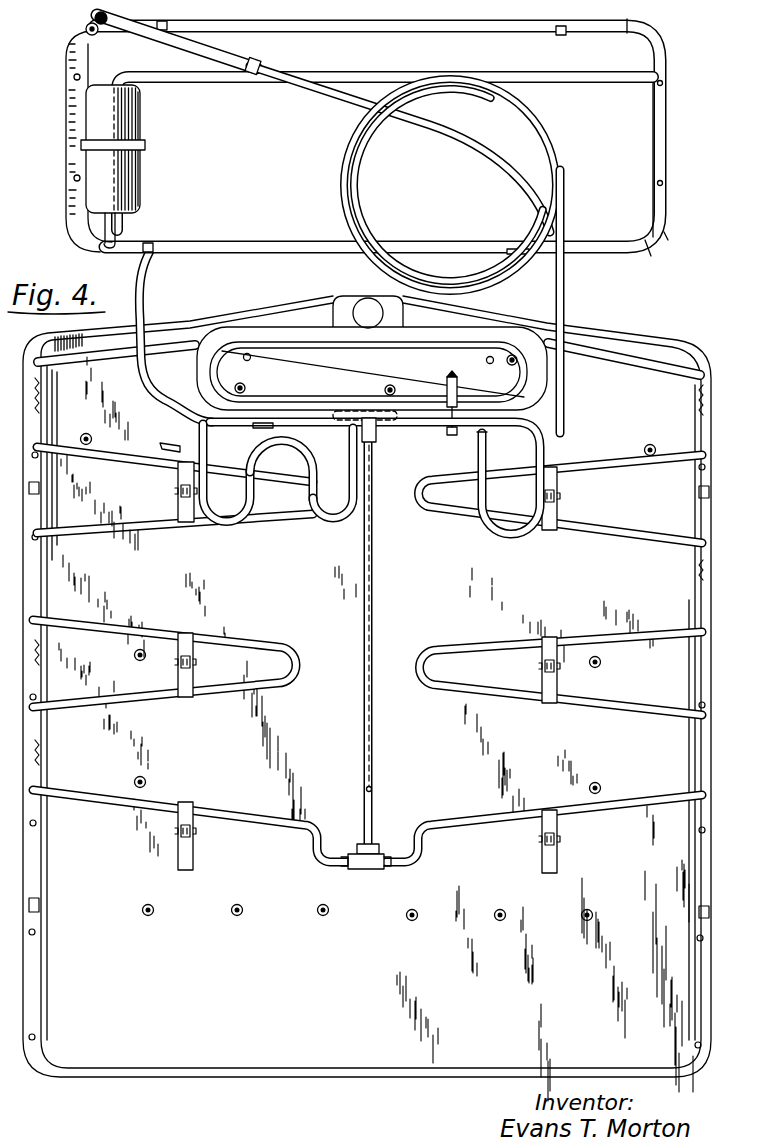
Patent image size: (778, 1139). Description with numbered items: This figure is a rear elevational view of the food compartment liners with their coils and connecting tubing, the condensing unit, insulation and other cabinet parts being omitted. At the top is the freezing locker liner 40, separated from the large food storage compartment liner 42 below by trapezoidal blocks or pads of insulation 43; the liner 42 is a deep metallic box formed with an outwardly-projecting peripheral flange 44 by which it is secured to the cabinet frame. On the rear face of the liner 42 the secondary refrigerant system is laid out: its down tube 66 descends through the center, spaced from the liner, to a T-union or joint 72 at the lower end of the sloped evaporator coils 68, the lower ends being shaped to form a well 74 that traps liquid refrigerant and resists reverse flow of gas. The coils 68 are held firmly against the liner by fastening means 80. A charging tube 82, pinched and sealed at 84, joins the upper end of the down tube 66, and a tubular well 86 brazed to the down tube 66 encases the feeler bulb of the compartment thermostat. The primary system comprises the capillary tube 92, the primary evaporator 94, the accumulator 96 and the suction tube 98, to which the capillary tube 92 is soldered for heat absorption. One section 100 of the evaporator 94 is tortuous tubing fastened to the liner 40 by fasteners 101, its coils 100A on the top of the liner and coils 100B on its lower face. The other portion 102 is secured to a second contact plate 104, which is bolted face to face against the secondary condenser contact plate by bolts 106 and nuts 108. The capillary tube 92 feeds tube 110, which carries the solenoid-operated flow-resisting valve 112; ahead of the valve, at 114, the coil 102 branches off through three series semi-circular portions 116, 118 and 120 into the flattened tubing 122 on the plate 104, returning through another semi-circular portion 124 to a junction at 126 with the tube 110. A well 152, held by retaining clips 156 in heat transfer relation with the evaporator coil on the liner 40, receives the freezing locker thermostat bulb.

The freezing locker liner 40 is at (200, 133).
The food storage compartment liner 42 is at (270, 1072).
The blocks or pads of insulation 43 is at (68, 153).
The peripheral flange 44 is at (30, 950).
The down tube 66 is at (375, 750).
The evaporator coils 68 is at (130, 622).
The T-union or joint 72 is at (362, 864).
The well 74 is at (310, 858).
The fastening means 80 is at (560, 514).
The charging tube 82 is at (178, 441).
The pinched and sealed point 84 is at (170, 455).
The tubular well 86 is at (375, 580).
The capillary tube 92 is at (148, 295).
The primary evaporator 94 is at (668, 232).
The accumulator 96 is at (98, 178).
The suction tube 98 is at (566, 300).
The tortuous evaporator section 100 is at (668, 124).
The top evaporator coils 100A is at (352, 24).
The lower evaporator coils 100B is at (305, 233).
The fasteners 101 is at (168, 28).
The evaporator coil portion 102 is at (266, 326).
The second contact plate 104 is at (410, 360).
The bolts 106 is at (385, 388).
The nuts 108 is at (245, 386).
The inlet tube 110 is at (333, 422).
The solenoid-operated flow-resisting valve 112 is at (470, 362).
The inlet connection point 114 is at (382, 430).
The first semi-circular portion 116 is at (347, 517).
The second semi-circular portion 118 is at (291, 443).
The third semi-circular portion 120 is at (215, 520).
The flattened tubing 122 is at (297, 333).
The outlet semi-circular portion 124 is at (505, 522).
The outlet junction 126 is at (470, 440).
The well 152 is at (85, 29).
The retaining clips 156 is at (98, 35).